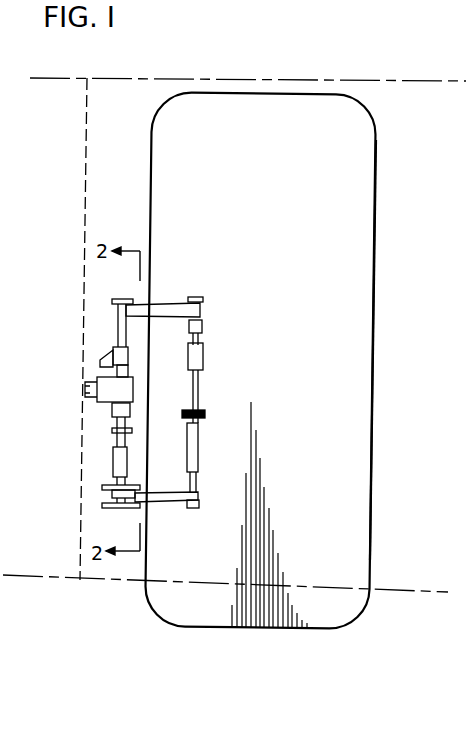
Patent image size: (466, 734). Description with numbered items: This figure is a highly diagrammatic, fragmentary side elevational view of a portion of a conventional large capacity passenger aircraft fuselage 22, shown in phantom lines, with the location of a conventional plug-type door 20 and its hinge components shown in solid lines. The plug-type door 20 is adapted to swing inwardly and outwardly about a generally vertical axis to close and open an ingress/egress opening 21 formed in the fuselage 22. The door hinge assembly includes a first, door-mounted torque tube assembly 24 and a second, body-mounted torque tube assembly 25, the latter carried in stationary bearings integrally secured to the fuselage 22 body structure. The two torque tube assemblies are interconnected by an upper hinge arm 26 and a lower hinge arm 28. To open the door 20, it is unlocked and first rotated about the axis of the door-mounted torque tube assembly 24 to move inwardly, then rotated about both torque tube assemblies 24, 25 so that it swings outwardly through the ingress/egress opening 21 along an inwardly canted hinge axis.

The plug-type door 20 is at (357, 224).
The ingress/egress opening 21 is at (374, 384).
The fuselage 22 is at (356, 78).
The door-mounted torque tube assembly 24 is at (212, 393).
The body-mounted torque tube assembly 25 is at (98, 442).
The upper hinge arm 26 is at (171, 308).
The lower hinge arm 28 is at (155, 498).